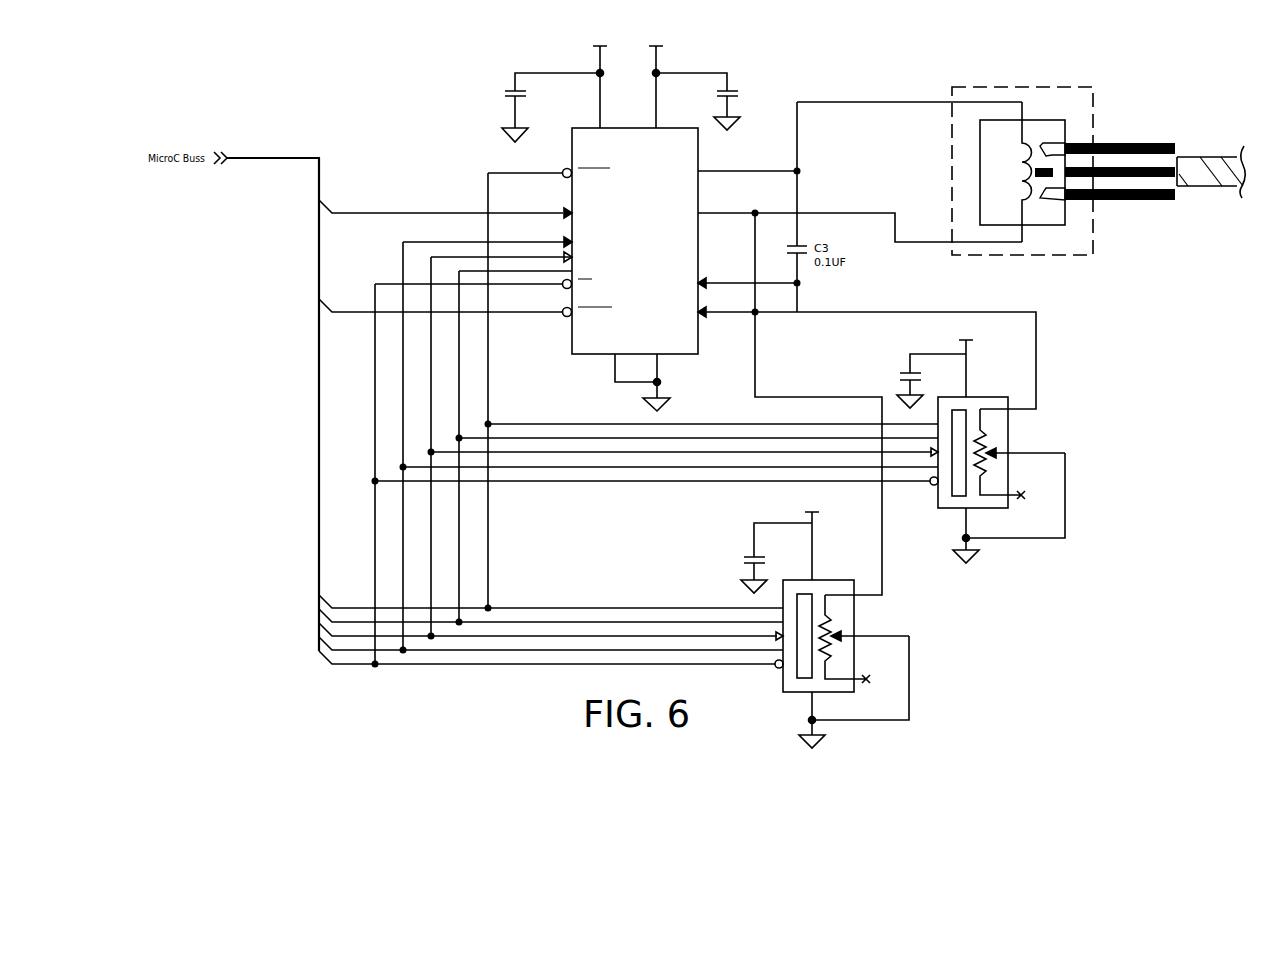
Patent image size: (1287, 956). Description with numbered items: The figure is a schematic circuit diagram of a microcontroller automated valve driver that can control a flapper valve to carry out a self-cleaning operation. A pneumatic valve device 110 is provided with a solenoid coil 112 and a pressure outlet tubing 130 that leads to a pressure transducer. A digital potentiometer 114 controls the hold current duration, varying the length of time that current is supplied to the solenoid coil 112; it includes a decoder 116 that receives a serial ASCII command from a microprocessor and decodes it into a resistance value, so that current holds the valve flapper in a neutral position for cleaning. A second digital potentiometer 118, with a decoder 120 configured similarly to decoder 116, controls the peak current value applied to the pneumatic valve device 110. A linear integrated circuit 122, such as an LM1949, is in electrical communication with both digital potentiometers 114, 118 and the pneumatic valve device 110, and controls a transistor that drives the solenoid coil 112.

The pneumatic valve device 110 is at (1104, 231).
The solenoid coil 112 is at (1023, 256).
The digital potentiometer 114 is at (1005, 446).
The decoder 116 is at (960, 496).
The digital potentiometer 118 is at (847, 623).
The decoder 120 is at (808, 678).
The linear integrated circuit 122 is at (588, 355).
The pressure outlet tubing 130 is at (1217, 186).